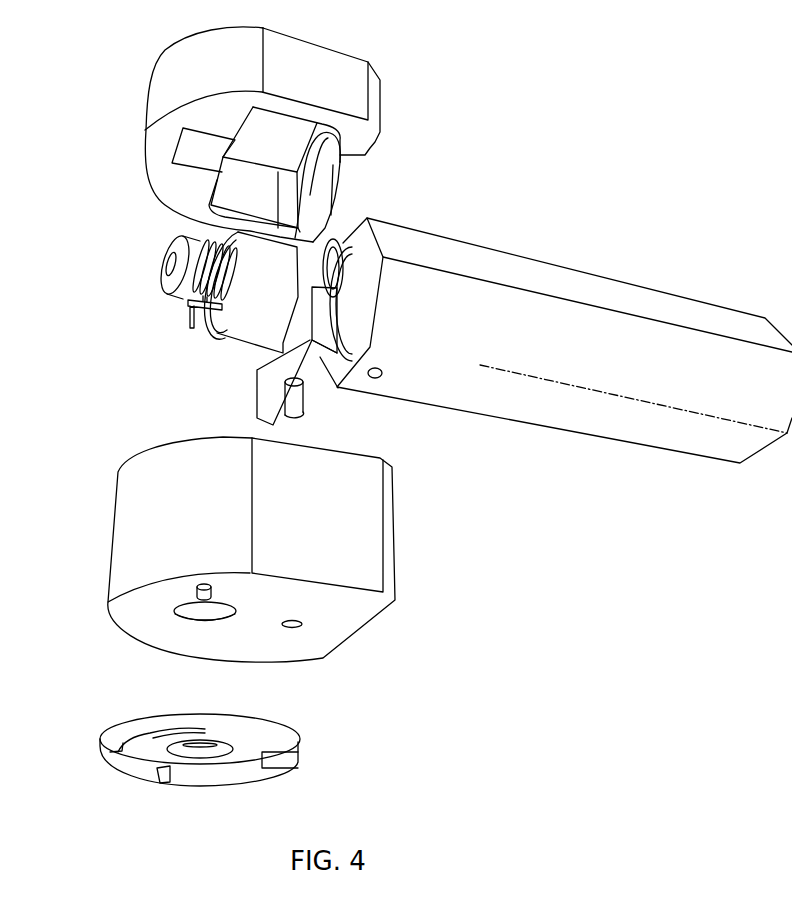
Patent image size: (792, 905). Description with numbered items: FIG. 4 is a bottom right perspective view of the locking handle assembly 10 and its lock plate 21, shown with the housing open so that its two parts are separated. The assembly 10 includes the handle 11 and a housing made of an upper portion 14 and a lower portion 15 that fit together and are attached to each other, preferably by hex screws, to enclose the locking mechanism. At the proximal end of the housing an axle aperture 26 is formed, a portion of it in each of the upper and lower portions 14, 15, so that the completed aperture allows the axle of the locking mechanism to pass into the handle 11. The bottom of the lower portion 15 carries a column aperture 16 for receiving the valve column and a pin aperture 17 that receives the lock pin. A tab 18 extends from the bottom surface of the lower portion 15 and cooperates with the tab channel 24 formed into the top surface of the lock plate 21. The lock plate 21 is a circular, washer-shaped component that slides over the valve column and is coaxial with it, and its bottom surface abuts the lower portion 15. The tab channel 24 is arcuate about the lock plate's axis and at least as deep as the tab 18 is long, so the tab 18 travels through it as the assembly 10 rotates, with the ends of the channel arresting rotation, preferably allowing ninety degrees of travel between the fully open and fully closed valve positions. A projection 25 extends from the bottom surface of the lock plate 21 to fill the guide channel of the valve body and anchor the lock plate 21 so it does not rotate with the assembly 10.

The assembly 10 is at (613, 70).
The handle 11 is at (618, 282).
The upper portion 14 is at (352, 50).
The lower portion 15 is at (395, 548).
The column aperture 16 is at (182, 608).
The pin aperture 17 is at (298, 628).
The tab 18 is at (197, 593).
The lock plate 21 is at (257, 722).
The tab channel 24 is at (121, 755).
The projection 25 is at (233, 787).
The axle aperture 26 is at (349, 190).